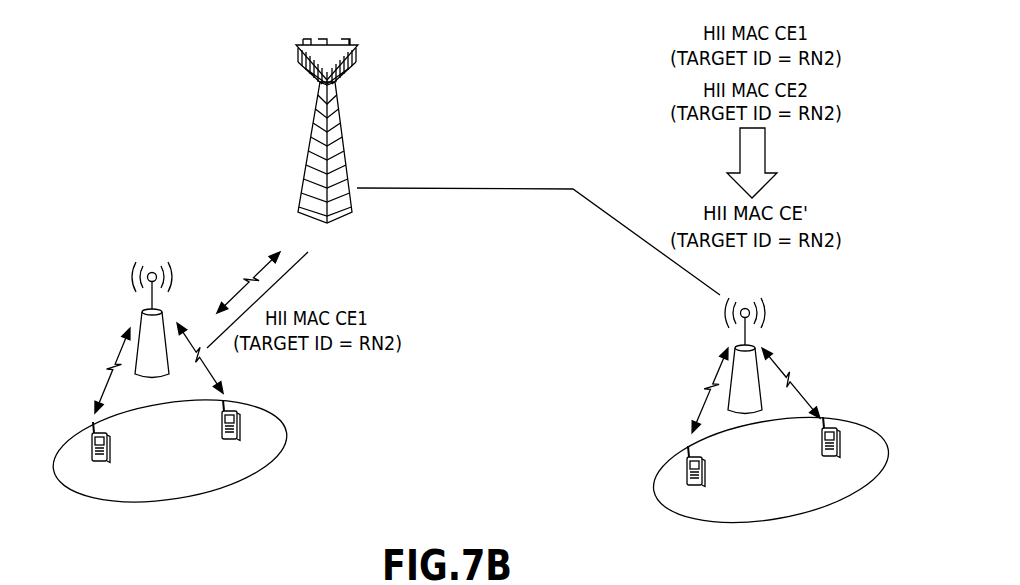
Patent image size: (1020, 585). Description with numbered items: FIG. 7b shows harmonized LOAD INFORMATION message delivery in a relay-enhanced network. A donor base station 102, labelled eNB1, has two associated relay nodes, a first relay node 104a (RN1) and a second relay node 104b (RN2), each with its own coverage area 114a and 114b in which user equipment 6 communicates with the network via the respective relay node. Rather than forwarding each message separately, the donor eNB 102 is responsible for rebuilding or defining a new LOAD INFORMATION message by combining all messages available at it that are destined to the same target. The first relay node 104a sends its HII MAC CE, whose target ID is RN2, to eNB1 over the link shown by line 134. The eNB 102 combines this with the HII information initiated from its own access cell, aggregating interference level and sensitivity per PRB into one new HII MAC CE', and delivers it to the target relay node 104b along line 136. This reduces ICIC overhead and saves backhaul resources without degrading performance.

The base station 102 is at (312, 136).
The first relay node 104a is at (142, 312).
The second relay node 104b is at (735, 348).
The coverage area 114a is at (285, 425).
The coverage area 114b is at (656, 466).
The line 134 is at (276, 283).
The line 136 is at (620, 224).
The user equipment 6 is at (112, 448).